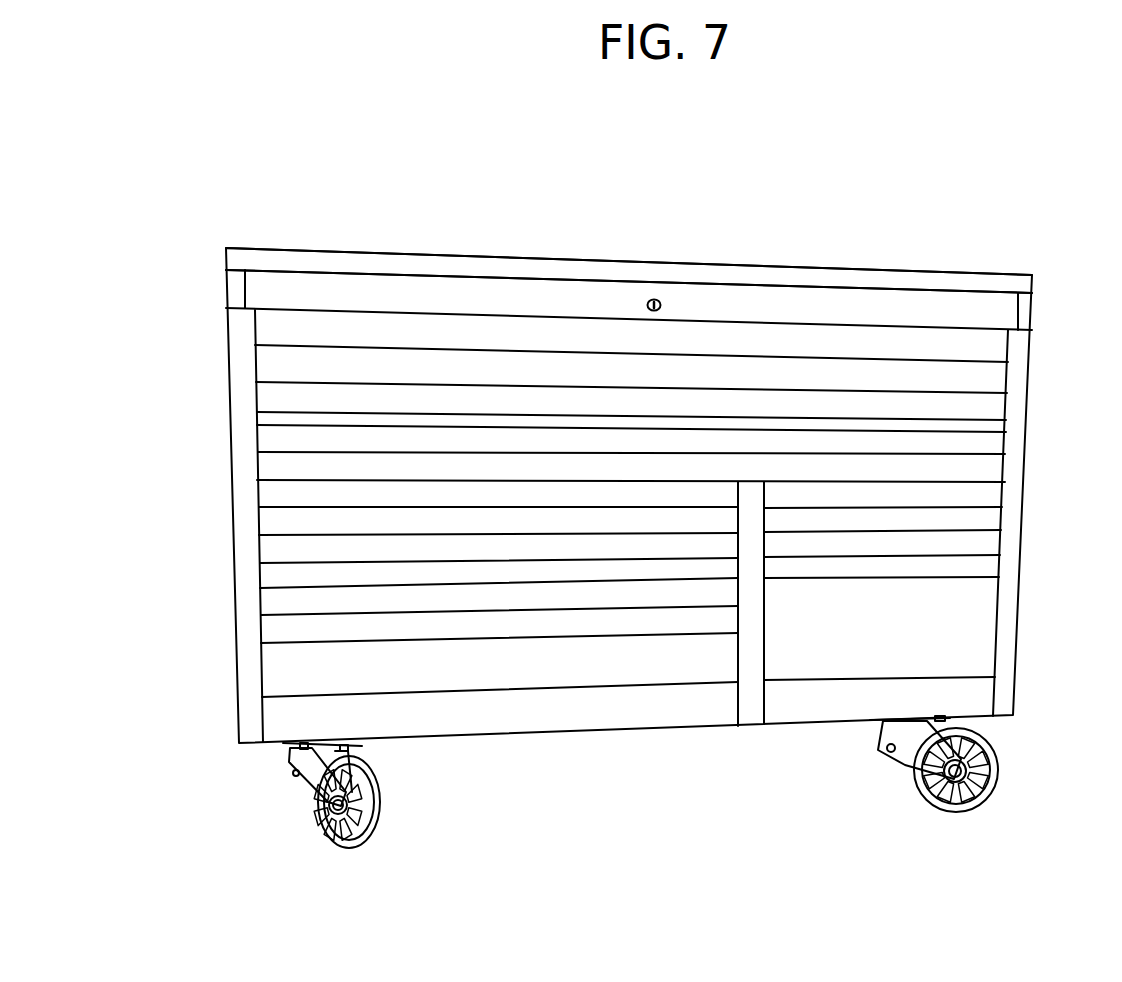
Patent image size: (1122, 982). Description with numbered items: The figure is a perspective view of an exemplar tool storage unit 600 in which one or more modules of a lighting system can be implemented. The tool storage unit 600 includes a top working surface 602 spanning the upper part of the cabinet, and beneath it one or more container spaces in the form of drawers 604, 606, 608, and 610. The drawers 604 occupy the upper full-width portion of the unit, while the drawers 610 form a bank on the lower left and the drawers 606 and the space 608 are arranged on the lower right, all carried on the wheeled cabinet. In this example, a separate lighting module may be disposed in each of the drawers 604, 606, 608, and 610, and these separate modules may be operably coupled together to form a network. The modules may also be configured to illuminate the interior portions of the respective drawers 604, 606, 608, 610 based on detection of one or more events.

The tool storage unit 600 is at (216, 249).
The top working surface 602 is at (520, 257).
The drawer 604 is at (268, 331).
The drawer 606 is at (987, 495).
The drawer 608 is at (982, 598).
The drawer 610 is at (268, 494).